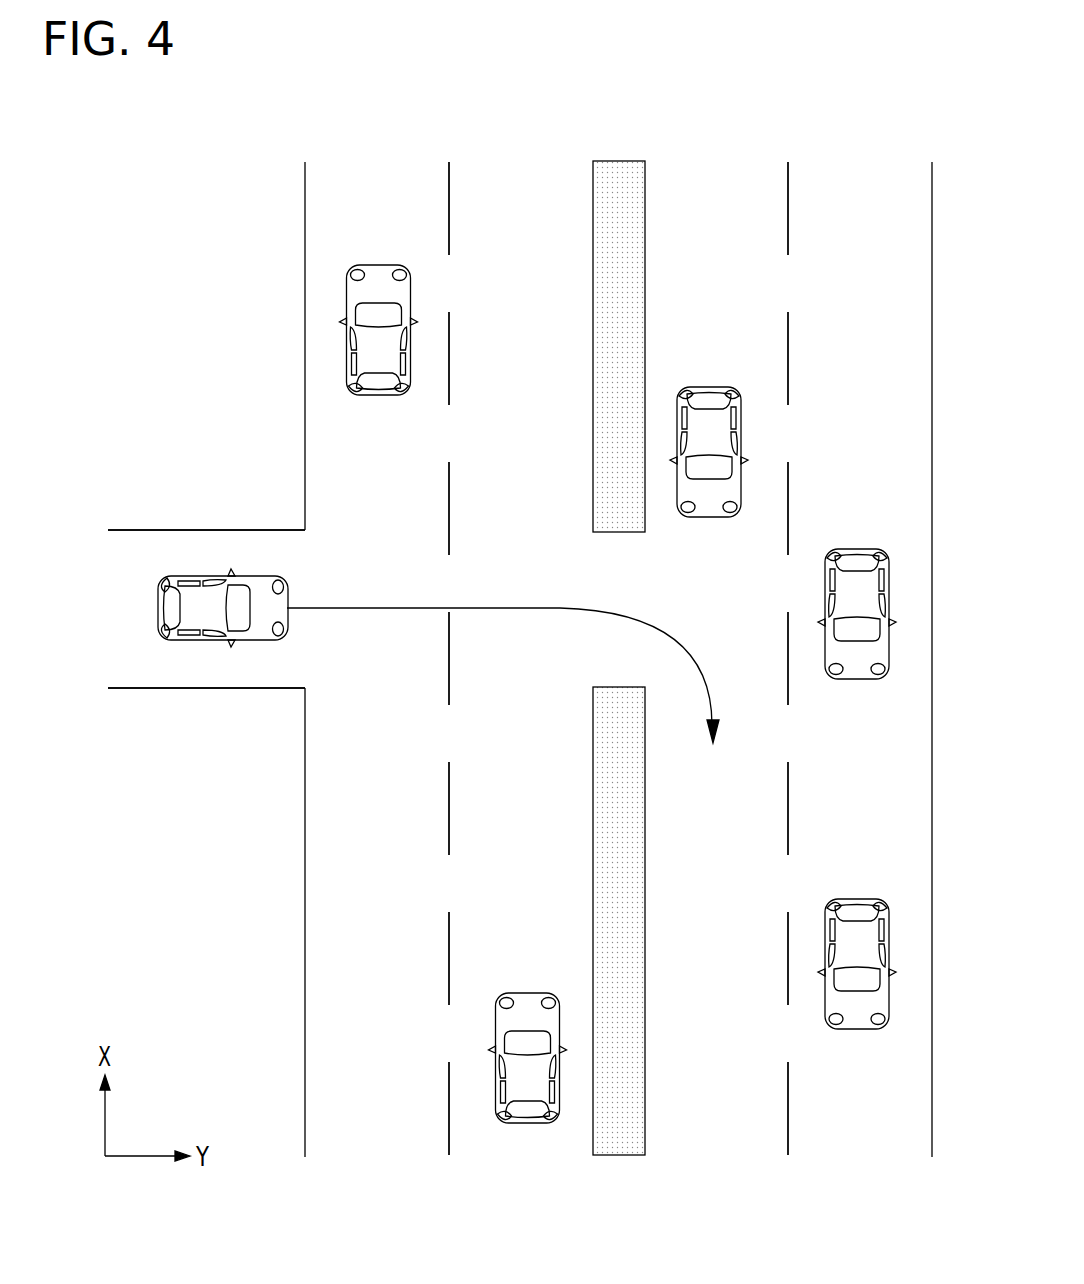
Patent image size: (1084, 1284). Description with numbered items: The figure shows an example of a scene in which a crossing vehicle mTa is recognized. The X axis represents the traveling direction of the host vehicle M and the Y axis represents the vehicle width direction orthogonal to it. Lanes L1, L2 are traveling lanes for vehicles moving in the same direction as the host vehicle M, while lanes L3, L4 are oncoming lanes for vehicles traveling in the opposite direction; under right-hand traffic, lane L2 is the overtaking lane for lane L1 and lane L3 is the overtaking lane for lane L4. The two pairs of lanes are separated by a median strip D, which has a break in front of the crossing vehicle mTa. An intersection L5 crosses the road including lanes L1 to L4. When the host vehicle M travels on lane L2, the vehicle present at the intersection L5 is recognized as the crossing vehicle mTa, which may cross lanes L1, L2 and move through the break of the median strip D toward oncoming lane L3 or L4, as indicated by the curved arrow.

The traveling lane L1 is at (448, 153).
The traveling lane L2 is at (591, 153).
The traveling lane L3 is at (788, 153).
The traveling lane L4 is at (932, 153).
The intersection L5 is at (105, 530).
The median strip D is at (623, 172).
The host vehicle M is at (527, 1123).
The crossing vehicle mTa is at (208, 577).